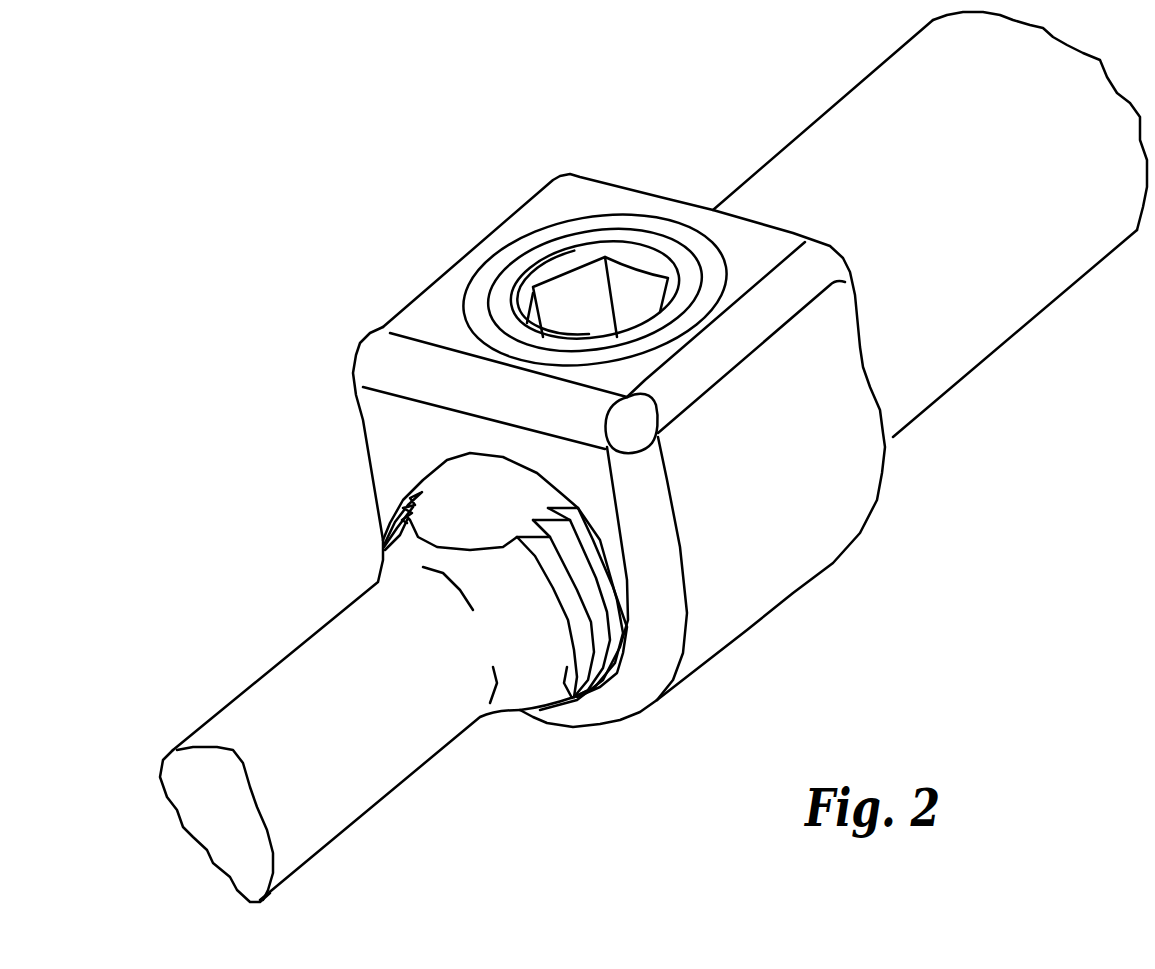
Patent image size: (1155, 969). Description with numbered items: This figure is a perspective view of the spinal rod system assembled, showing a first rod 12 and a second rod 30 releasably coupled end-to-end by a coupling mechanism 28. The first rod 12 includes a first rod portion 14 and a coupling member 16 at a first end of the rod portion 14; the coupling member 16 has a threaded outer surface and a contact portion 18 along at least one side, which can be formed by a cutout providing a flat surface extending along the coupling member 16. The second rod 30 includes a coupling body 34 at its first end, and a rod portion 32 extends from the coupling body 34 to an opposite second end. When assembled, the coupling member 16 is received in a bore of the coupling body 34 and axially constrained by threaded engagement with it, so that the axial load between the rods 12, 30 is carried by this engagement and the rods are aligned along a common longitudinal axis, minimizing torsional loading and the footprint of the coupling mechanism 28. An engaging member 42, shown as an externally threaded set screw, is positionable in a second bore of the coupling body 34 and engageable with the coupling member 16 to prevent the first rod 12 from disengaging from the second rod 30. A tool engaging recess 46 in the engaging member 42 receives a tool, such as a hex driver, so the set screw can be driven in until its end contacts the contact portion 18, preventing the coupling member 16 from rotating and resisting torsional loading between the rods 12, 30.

The first rod 12 is at (306, 626).
The first rod portion 14 is at (407, 780).
The coupling member 16 is at (574, 698).
The contact portion 18 is at (452, 497).
The coupling mechanism 28 is at (287, 257).
The second rod 30 is at (786, 132).
The rod portion 32 is at (997, 320).
The coupling body 34 is at (360, 387).
The engaging member 42 is at (506, 278).
The tool engaging recess 46 is at (582, 290).